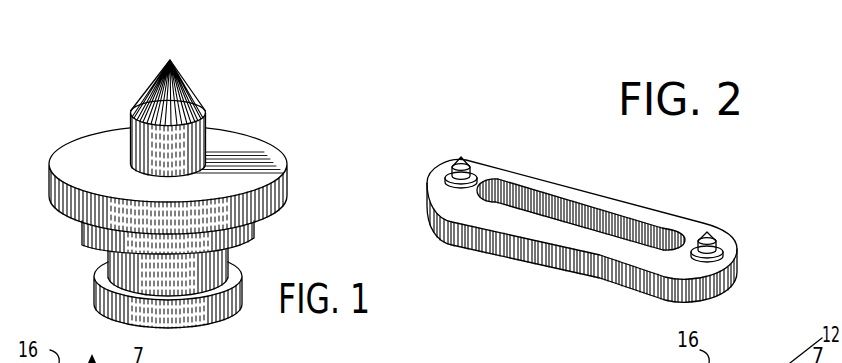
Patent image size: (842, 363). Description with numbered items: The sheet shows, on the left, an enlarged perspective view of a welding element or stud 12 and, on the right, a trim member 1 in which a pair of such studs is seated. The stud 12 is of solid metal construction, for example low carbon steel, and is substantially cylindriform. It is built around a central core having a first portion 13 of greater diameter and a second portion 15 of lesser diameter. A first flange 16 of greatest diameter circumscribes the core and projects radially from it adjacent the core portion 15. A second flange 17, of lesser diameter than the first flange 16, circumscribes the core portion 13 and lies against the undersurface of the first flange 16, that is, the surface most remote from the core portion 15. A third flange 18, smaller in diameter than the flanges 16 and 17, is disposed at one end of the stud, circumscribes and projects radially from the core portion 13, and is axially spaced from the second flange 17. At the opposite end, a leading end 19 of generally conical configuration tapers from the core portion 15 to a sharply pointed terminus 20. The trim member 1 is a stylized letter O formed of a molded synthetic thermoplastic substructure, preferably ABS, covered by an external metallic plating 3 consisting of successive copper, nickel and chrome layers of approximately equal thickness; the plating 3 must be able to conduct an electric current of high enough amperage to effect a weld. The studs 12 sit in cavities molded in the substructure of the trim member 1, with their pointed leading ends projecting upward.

In FIG. 1, the stud 12 is at (166, 183).
In FIG. 2, the stud 12 is at (467, 157).
In FIG. 1, the first portion of the central core 13 is at (152, 268).
In FIG. 1, the second portion of the central core 15 is at (163, 141).
In FIG. 1, the first flange 16 is at (77, 152).
In FIG. 1, the second flange 17 is at (254, 234).
In FIG. 1, the third flange 18 is at (243, 300).
In FIG. 1, the leading end 19 is at (184, 96).
In FIG. 1, the sharply pointed terminus 20 is at (170, 60).
In FIG. 2, the trim member 1 is at (585, 200).
In FIG. 2, the metallic plating 3 is at (652, 221).